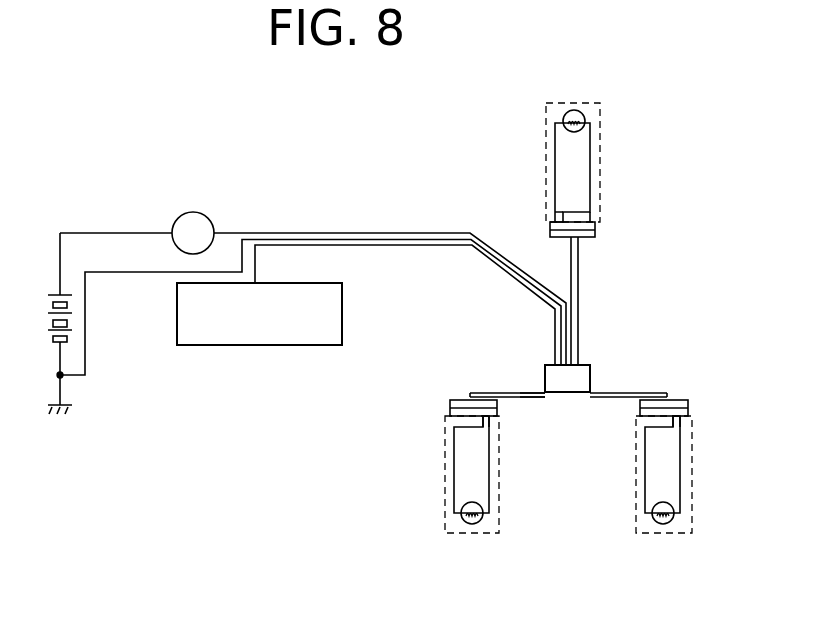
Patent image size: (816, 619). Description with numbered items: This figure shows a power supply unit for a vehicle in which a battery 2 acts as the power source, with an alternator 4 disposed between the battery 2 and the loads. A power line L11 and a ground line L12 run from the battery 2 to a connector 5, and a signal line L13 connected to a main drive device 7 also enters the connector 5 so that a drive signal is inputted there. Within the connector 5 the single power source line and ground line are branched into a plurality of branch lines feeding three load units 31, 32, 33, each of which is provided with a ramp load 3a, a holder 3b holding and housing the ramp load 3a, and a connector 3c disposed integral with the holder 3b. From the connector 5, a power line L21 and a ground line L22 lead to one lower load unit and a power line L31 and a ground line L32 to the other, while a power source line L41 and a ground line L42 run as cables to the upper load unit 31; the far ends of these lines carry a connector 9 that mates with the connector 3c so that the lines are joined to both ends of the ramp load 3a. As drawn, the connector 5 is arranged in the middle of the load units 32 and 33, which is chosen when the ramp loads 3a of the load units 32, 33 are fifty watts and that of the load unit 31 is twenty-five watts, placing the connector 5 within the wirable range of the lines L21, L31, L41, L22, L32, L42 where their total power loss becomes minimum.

The battery 2 is at (52, 288).
The alternator 4 is at (176, 223).
The connector 5 is at (592, 392).
The main drive device 7 is at (255, 346).
The connector 9 is at (598, 232).
The load unit 31 is at (602, 118).
The load unit 32 is at (478, 533).
The load unit 33 is at (668, 533).
The ramp load 3a is at (566, 113).
The holder 3b is at (602, 163).
The connector 3c is at (588, 220).
The power line L11 is at (431, 232).
The ground line L12 is at (373, 238).
The signal line L13 is at (307, 244).
The power line L21 is at (483, 392).
The ground line L22 is at (528, 392).
The power line L31 is at (618, 392).
The ground line L32 is at (680, 396).
The power source line L41 is at (578, 275).
The ground line L42 is at (578, 293).